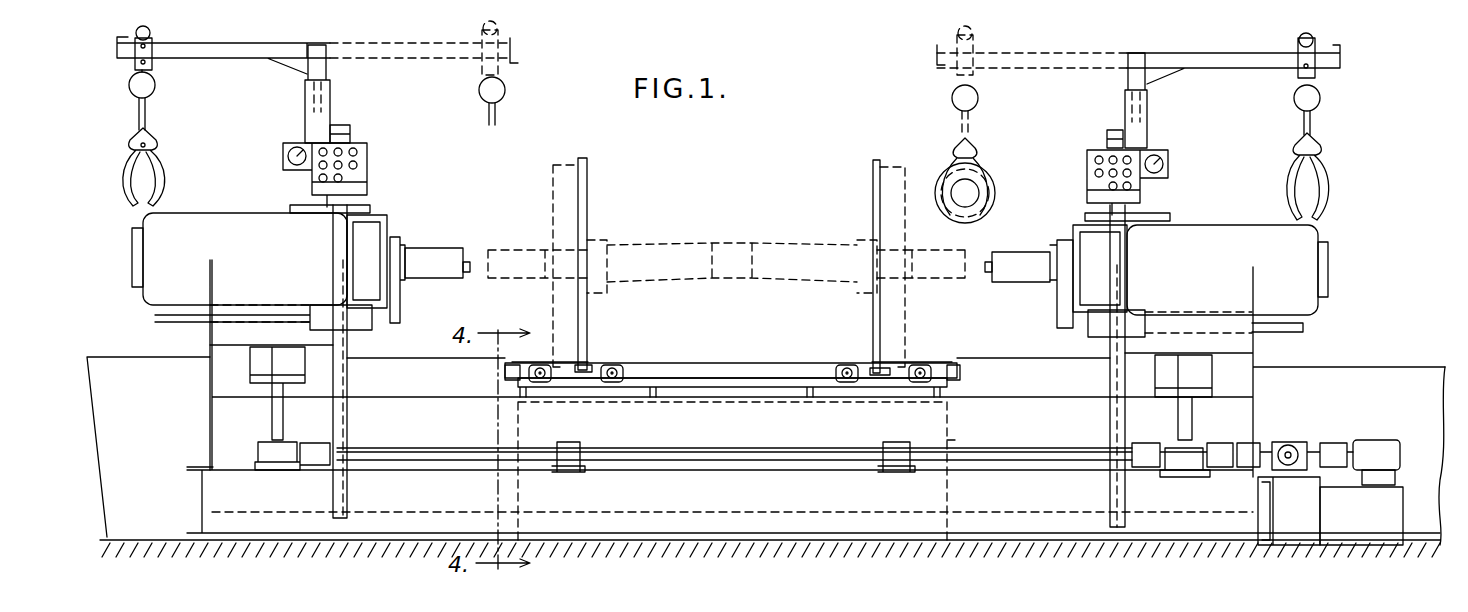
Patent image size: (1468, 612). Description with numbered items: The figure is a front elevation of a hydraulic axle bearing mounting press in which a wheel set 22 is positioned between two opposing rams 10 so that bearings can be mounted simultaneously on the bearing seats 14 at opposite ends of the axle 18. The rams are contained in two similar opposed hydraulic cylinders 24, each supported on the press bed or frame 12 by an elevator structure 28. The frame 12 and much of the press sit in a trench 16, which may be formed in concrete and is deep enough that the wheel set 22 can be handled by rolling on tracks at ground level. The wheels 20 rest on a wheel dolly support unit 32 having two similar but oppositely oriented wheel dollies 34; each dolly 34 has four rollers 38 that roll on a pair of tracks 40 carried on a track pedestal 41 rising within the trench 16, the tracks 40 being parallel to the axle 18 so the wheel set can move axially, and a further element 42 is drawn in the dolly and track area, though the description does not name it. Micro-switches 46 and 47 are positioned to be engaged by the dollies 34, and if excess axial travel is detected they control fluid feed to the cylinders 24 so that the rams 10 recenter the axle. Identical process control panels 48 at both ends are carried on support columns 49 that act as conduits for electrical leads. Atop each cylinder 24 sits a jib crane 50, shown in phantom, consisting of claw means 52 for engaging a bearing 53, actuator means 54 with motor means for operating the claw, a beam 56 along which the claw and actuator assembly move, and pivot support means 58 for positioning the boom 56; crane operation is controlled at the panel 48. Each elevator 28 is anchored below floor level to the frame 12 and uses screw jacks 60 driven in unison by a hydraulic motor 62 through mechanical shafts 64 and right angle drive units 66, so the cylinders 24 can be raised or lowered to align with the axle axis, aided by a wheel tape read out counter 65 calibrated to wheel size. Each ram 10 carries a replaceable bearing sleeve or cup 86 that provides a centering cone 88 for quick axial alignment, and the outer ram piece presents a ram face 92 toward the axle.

The ram 10 is at (410, 250).
The press bed or frame 12 is at (835, 482).
The bearing seat 14 is at (512, 250).
The trench 16 is at (1412, 548).
The axle 18 is at (755, 240).
The wheel 20 is at (556, 166).
The wheel set 22 is at (635, 238).
The hydraulic cylinder 24 is at (225, 214).
The elevator structure 28 is at (270, 392).
The wheel dolly support unit 32 is at (713, 375).
The wheel dolly 34 is at (588, 345).
The roller 38 is at (540, 364).
The track 40 is at (776, 376).
The track pedestal 41 is at (950, 442).
The carriage 42 is at (586, 376).
The micro-switch 46 is at (505, 372).
The micro-switch 47 is at (955, 370).
The process control panel 48 is at (368, 162).
The support column 49 is at (334, 242).
The jib crane 50 is at (152, 60).
The claw means 52 is at (124, 180).
The bearing 53 is at (994, 218).
The actuator means 54 is at (130, 82).
The beam 56 is at (238, 35).
The pivot support means 58 is at (330, 106).
The screw jack 60 is at (262, 437).
The hydraulic motor 62 is at (1378, 440).
The mechanical shaft 64 is at (780, 450).
The wheel tape read out counter 65 is at (350, 131).
The right angle drive unit 66 is at (1292, 442).
The bearing sleeve or cup 86 is at (448, 270).
The centering cone 88 is at (471, 270).
The ram face 92 is at (394, 322).